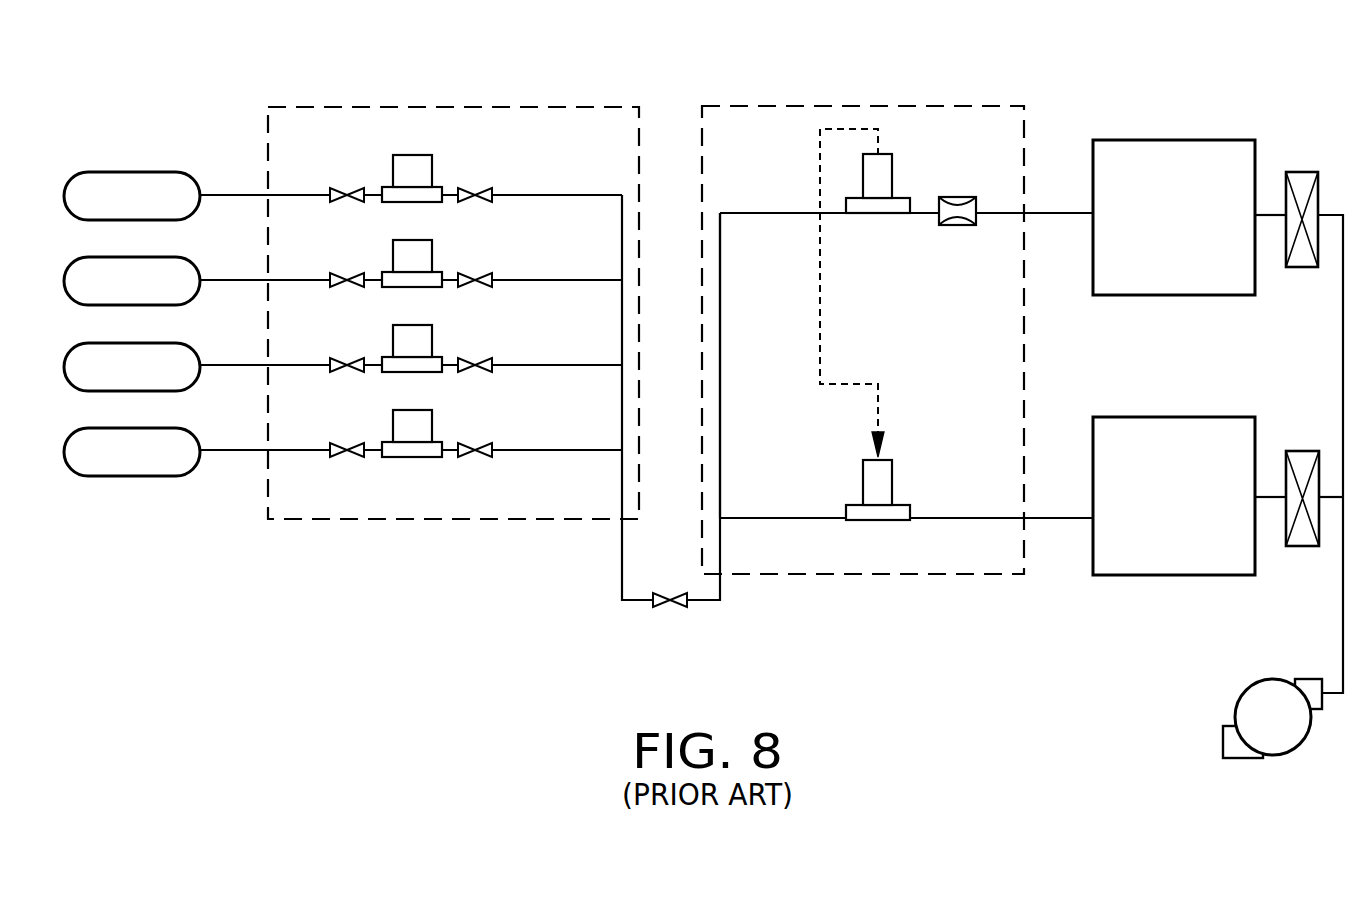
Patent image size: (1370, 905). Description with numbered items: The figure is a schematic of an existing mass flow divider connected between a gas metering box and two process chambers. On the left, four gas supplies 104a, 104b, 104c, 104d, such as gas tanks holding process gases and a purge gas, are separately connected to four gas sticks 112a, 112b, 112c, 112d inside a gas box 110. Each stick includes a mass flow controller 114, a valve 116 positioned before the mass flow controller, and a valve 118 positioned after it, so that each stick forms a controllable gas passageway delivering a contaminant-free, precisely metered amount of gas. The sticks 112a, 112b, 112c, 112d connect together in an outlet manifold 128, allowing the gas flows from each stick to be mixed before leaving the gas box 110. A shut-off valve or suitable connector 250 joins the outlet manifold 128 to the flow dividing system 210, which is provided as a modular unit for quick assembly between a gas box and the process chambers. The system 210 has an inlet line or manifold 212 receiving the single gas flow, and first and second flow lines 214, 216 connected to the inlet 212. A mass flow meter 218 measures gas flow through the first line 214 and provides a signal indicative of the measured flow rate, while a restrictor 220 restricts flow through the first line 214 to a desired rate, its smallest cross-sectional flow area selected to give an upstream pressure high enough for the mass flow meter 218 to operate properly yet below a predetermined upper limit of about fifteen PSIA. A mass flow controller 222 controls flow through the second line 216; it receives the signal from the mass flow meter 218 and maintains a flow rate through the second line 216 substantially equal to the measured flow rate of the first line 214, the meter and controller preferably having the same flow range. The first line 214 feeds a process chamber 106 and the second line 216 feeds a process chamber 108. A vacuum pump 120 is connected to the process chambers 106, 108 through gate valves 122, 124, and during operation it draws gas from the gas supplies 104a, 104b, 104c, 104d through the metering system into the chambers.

The gas supply 104a is at (194, 173).
The gas supply 104b is at (194, 258).
The gas supply 104c is at (194, 344).
The gas supply 104d is at (194, 429).
The gas box 110 is at (486, 100).
The gas stick 112a is at (545, 194).
The gas stick 112b is at (545, 279).
The gas stick 112c is at (545, 364).
The gas stick 112d is at (545, 449).
The mass flow controller 114 is at (411, 155).
The valve 116 is at (346, 192).
The valve 118 is at (475, 193).
The outlet manifold 128 is at (622, 561).
The shut-off valve or connector 250 is at (664, 605).
The flow dividing system 210 is at (878, 96).
The inlet line or manifold 212 is at (720, 380).
The first flow line 214 is at (750, 214).
The second flow line 216 is at (750, 520).
The mass flow meter 218 is at (892, 163).
The restrictor 220 is at (958, 225).
The mass flow controller 222 is at (892, 472).
The process chamber 106 is at (1172, 140).
The process chamber 108 is at (1172, 417).
The gate valve 122 is at (1302, 172).
The gate valve 124 is at (1302, 451).
The vacuum pump 120 is at (1292, 755).